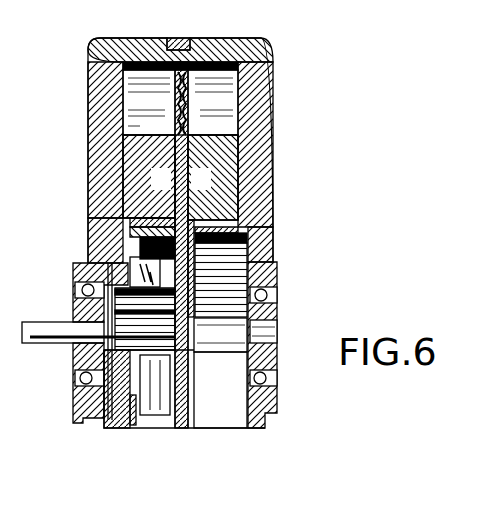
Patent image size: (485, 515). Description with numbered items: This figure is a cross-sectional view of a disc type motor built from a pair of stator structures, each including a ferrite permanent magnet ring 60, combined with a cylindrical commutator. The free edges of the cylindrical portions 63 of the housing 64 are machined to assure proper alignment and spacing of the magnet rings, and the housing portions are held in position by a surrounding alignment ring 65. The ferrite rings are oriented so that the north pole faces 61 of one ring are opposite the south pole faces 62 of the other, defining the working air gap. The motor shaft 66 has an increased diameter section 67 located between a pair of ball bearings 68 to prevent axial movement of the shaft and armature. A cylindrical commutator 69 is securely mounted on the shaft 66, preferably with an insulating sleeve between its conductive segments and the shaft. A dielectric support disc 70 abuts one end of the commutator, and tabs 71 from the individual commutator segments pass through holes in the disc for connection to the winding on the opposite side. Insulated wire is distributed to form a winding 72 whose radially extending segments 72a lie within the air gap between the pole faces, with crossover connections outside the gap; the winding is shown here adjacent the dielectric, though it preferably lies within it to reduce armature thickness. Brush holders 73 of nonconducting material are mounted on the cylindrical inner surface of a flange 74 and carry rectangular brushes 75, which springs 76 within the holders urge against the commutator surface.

The permanent magnets 60 is at (127, 158).
The north pole faces 61 is at (172, 150).
The south pole faces 62 is at (193, 143).
The housing side wall 63 is at (96, 112).
The housing top wall 64 is at (133, 45).
The alignment ring 65 is at (183, 40).
The motor shaft 66 is at (36, 345).
The increased diameter section 67 is at (232, 356).
The ball bearings 68 is at (86, 303).
The cylindrical commutator 69 is at (120, 384).
The dielectric support disc 70 is at (175, 101).
The tabs 71 is at (198, 342).
The winding 72 is at (192, 107).
The radially extending segments 72a is at (188, 131).
The brush holders 73 is at (135, 231).
The flange 74 is at (133, 222).
The brushes 75 is at (128, 262).
The springs 76 is at (158, 241).